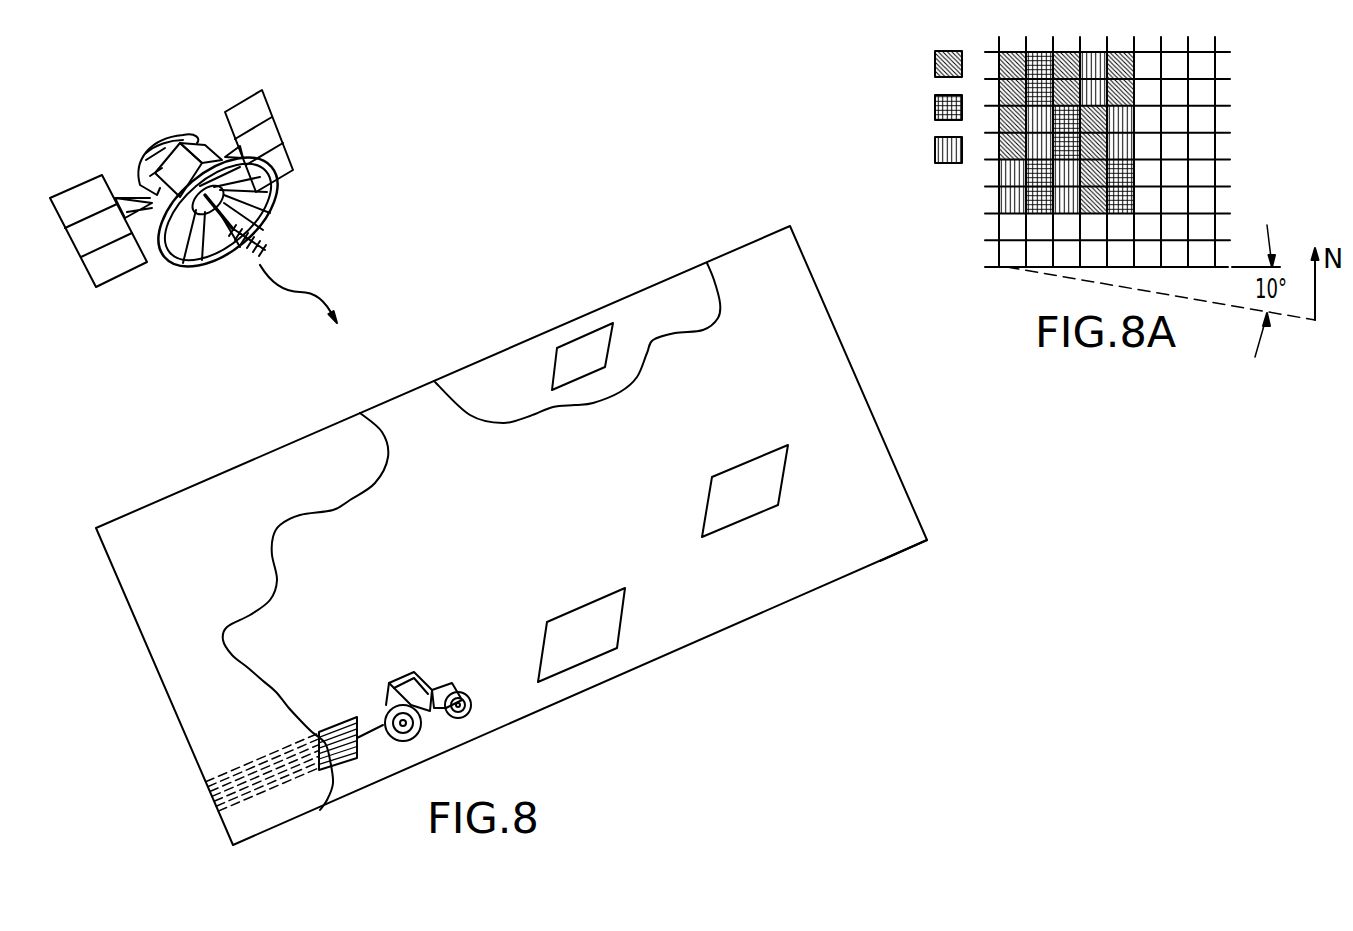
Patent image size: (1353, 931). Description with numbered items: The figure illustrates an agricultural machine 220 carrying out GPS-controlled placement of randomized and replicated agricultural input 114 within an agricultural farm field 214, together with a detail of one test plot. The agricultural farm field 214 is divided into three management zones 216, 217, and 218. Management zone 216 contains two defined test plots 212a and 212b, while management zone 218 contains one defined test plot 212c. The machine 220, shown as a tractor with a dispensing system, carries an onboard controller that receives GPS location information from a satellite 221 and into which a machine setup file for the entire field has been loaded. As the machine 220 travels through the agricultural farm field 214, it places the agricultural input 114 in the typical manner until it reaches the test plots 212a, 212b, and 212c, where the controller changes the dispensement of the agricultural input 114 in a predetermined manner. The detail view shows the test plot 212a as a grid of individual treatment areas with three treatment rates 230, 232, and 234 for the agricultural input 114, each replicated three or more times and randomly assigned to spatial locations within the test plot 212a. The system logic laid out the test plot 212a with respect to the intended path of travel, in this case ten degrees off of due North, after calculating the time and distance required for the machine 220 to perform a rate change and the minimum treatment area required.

In FIG. 8, the satellite 221 is at (283, 128).
In FIG. 8, the management zone 216 is at (837, 390).
In FIG. 8, the agricultural farm field 214 is at (923, 533).
In FIG. 8, the management zone 217 is at (207, 551).
In FIG. 8, the management zone 218 is at (687, 321).
In FIG. 8, the test plot 212a is at (610, 610).
In FIG. 8A, the test plot 212a is at (1233, 105).
In FIG. 8, the test plot 212b is at (770, 483).
In FIG. 8, the test plot 212c is at (610, 350).
In FIG. 8, the agricultural input 114 is at (341, 702).
In FIG. 8, the machine 220 is at (440, 680).
In FIG. 8A, the treatment rate 230 is at (933, 64).
In FIG. 8A, the treatment rate 232 is at (933, 107).
In FIG. 8A, the treatment rate 234 is at (933, 150).